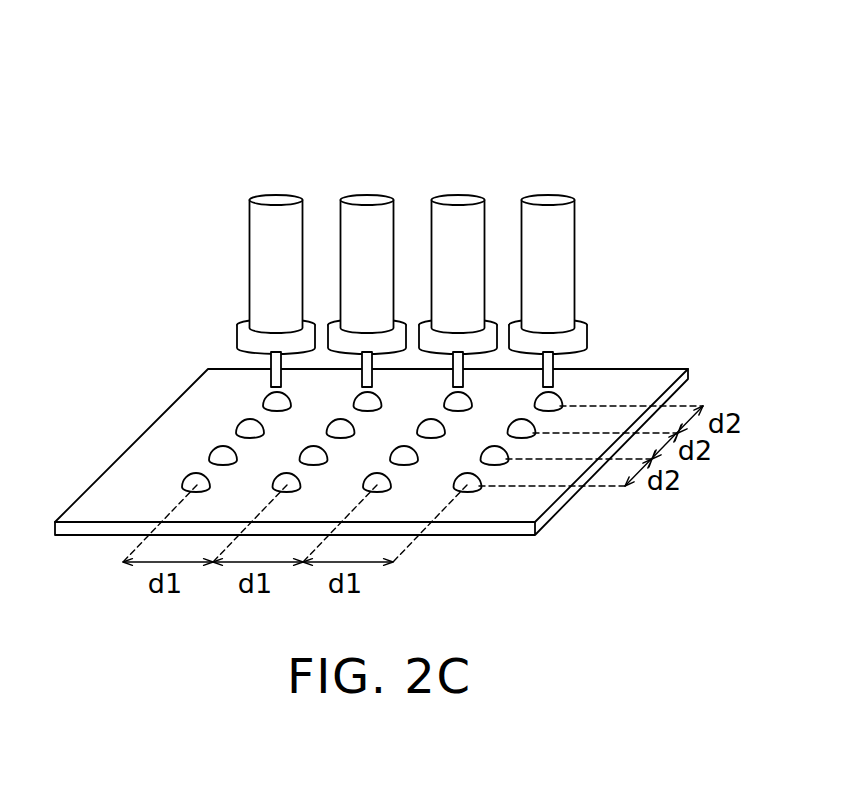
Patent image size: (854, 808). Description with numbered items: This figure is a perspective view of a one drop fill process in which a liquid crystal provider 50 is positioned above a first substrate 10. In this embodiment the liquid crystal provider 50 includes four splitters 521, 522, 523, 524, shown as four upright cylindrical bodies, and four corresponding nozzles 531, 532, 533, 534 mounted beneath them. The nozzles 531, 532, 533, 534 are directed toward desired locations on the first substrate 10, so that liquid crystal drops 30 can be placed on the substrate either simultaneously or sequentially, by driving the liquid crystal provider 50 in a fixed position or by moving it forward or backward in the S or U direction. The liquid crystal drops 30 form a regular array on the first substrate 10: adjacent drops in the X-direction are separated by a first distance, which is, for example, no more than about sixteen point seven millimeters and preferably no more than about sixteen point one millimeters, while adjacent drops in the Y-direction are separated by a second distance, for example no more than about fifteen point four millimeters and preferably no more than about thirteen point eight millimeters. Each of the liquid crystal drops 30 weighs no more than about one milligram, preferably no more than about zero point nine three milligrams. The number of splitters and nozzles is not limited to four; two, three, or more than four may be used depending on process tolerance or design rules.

The first substrate 10 is at (667, 378).
The liquid crystal drops 30 is at (277, 402).
The liquid crystal provider 50 is at (258, 90).
The splitter 521 is at (278, 198).
The splitter 522 is at (367, 198).
The splitter 523 is at (458, 198).
The splitter 524 is at (548, 198).
The nozzle 531 is at (280, 364).
The nozzle 532 is at (367, 364).
The nozzle 533 is at (458, 364).
The nozzle 534 is at (548, 364).